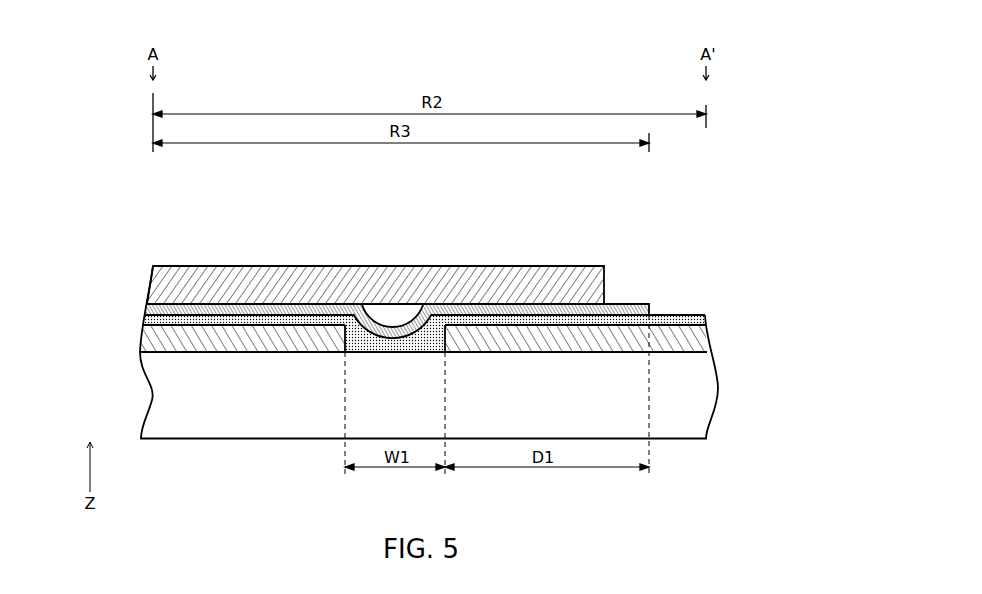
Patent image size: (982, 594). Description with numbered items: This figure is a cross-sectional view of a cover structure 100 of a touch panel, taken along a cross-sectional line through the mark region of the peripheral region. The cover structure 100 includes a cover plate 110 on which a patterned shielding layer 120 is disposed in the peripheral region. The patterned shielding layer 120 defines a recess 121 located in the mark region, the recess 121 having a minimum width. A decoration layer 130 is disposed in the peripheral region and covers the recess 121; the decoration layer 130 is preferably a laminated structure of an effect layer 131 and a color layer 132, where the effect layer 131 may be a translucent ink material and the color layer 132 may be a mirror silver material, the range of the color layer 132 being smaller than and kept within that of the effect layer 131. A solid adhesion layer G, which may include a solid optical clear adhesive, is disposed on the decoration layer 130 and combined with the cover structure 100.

The cover structure 100 is at (792, 70).
The cover plate 110 is at (158, 392).
The patterned shielding layer 120 is at (153, 338).
The recess 121 is at (393, 345).
The decoration layer 130 is at (63, 297).
The effect layer 131 is at (148, 320).
The color layer 132 is at (148, 310).
The solid adhesion layer G is at (160, 290).